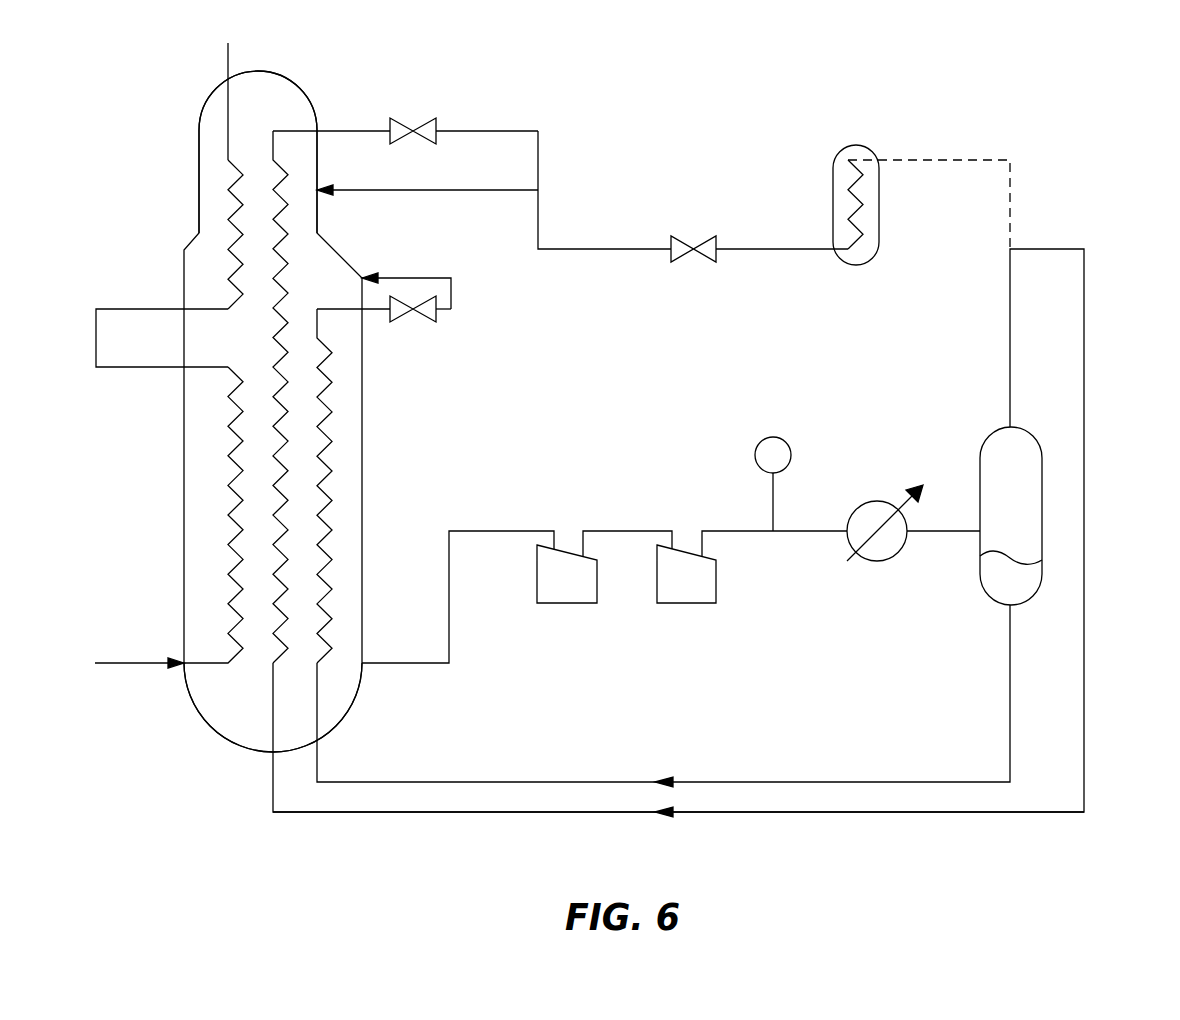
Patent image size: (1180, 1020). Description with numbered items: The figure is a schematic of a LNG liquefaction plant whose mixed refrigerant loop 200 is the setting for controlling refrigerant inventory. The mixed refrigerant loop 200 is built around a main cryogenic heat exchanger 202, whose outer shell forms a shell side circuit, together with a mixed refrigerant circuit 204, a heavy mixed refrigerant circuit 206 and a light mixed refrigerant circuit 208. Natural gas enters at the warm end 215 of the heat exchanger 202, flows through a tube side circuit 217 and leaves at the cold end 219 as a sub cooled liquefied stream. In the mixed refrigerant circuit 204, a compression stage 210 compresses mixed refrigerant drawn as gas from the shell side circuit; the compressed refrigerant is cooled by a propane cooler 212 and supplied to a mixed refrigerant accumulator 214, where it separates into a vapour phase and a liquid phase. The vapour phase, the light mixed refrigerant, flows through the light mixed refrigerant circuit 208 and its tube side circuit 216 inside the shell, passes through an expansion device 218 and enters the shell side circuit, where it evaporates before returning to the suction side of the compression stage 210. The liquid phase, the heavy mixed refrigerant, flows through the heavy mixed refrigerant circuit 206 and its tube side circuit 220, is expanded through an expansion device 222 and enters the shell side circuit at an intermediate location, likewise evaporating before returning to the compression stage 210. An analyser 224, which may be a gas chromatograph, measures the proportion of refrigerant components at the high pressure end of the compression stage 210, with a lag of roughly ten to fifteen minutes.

The mixed refrigerant loop 200 is at (1064, 78).
The main cryogenic heat exchanger 202 is at (198, 486).
The mixed refrigerant circuit 204 is at (551, 510).
The heavy mixed refrigerant circuit 206 is at (943, 782).
The light mixed refrigerant circuit 208 is at (943, 812).
The compression stage 210 is at (519, 631).
The propane cooler 212 is at (877, 500).
The mixed refrigerant accumulator 214 is at (1042, 515).
The warm end 215 is at (198, 692).
The tube side circuit 216 is at (273, 543).
The tube side circuit 217 is at (228, 425).
The expansion device 218 is at (437, 123).
The cold end 219 is at (199, 138).
The tube side circuit 220 is at (317, 602).
The expansion device 222 is at (437, 317).
The analyser 224 is at (773, 437).